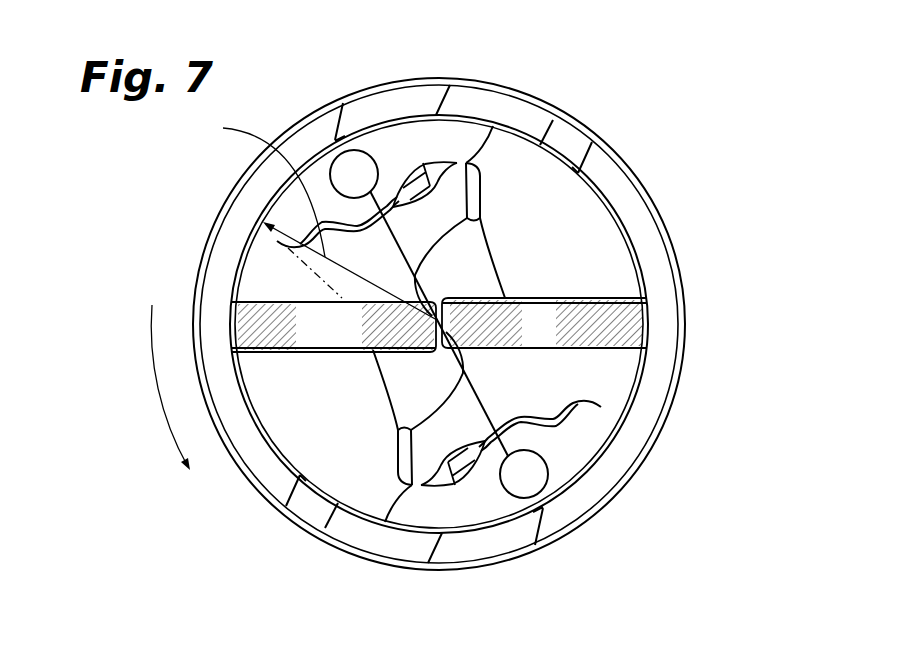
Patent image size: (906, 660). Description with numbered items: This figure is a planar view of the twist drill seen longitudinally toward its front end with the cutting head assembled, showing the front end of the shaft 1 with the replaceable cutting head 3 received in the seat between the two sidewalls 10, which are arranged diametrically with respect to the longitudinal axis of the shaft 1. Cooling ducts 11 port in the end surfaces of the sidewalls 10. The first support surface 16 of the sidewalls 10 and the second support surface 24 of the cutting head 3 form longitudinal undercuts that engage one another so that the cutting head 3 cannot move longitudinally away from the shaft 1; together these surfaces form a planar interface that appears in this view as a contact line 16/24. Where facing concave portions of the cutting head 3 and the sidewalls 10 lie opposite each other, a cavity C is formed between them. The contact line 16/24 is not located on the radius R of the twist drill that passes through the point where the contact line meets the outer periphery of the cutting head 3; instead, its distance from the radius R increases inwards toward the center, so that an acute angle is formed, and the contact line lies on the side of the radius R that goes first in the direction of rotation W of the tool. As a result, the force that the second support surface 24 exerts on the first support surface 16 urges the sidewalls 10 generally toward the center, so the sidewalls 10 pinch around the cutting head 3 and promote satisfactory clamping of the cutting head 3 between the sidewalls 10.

The shaft 1 is at (686, 243).
The replaceable cutting head 3 is at (305, 394).
The sidewalls 10 is at (399, 150).
The cooling ducts 11 is at (527, 474).
The first support surface 16 is at (342, 303).
The second support surface 24 is at (439, 325).
The cavity C is at (426, 181).
The radius R is at (261, 186).
The direction of rotation W is at (160, 398).